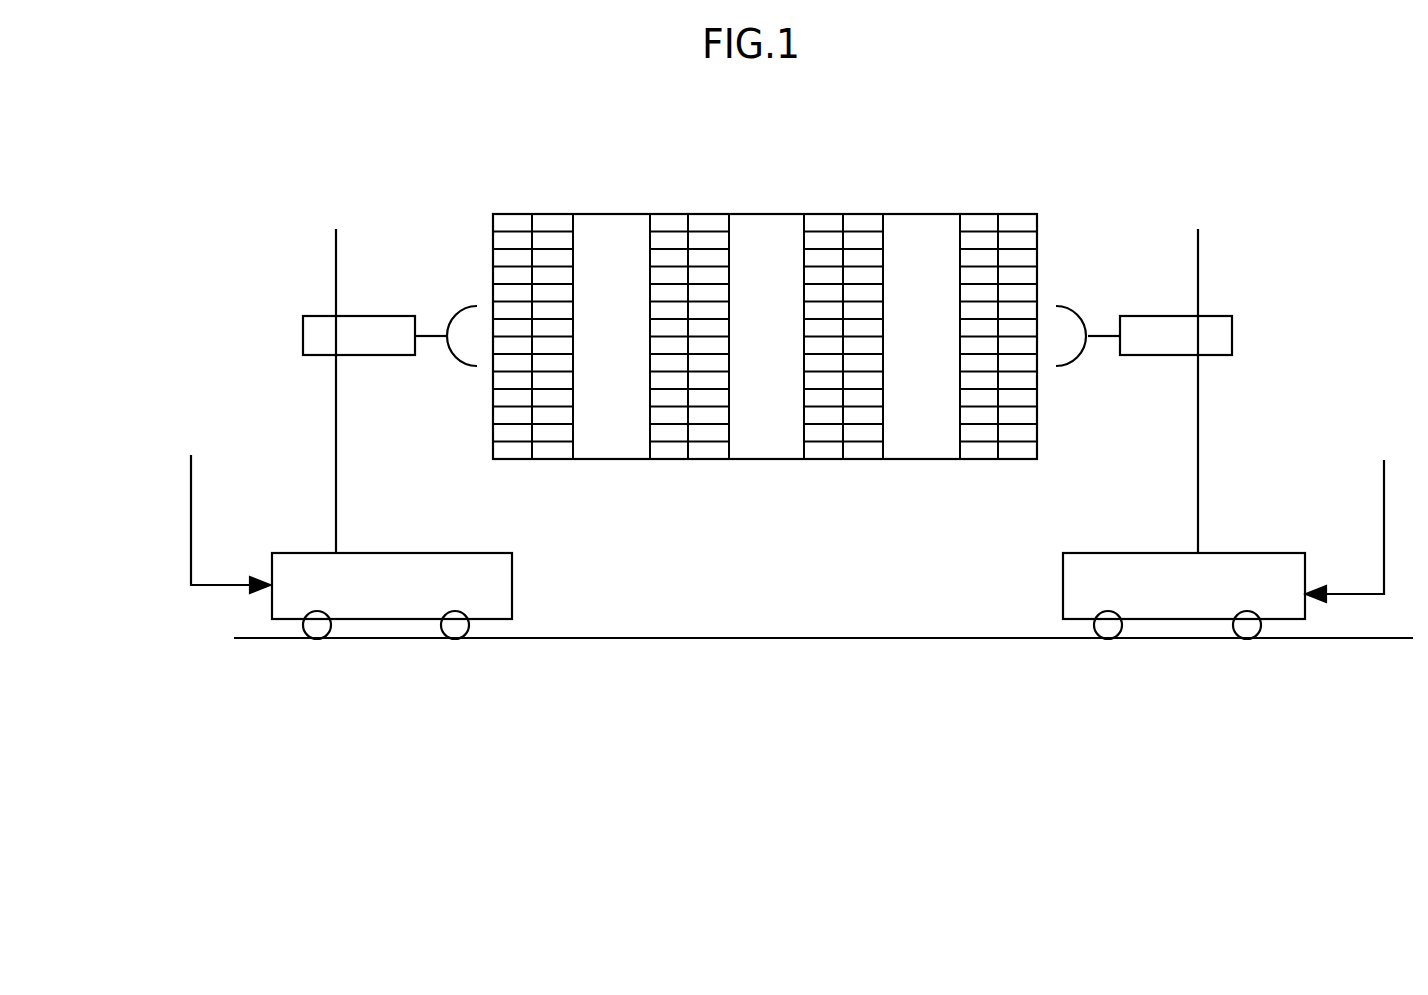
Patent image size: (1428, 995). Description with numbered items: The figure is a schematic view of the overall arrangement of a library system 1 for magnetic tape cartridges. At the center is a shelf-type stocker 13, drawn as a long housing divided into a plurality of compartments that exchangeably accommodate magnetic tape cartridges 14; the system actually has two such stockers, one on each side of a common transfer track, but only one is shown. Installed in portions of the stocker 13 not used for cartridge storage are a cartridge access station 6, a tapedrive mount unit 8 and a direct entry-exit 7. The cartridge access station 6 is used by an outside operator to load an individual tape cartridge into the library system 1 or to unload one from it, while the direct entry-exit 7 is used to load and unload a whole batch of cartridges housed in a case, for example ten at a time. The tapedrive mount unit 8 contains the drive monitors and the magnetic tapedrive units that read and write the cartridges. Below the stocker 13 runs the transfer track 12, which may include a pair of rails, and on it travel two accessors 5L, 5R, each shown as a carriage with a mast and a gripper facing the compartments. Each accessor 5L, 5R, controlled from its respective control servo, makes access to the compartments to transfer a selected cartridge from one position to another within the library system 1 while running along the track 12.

The library system 1 is at (946, 154).
The magnetic tape cartridges 14 is at (541, 228).
The cartridge access station 6 is at (600, 222).
The tapedrive mount unit 8 is at (759, 220).
The direct entry-exit 7 is at (906, 222).
The shelf-type stocker 13 is at (715, 459).
The transfer track 12 is at (730, 638).
The accessor 5L is at (493, 577).
The accessor 5R is at (1072, 592).